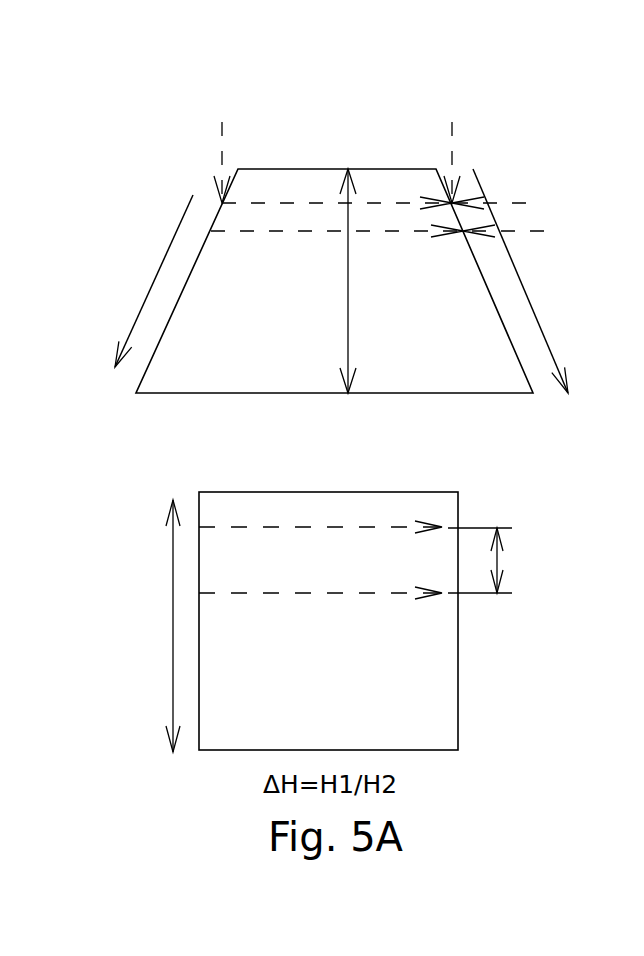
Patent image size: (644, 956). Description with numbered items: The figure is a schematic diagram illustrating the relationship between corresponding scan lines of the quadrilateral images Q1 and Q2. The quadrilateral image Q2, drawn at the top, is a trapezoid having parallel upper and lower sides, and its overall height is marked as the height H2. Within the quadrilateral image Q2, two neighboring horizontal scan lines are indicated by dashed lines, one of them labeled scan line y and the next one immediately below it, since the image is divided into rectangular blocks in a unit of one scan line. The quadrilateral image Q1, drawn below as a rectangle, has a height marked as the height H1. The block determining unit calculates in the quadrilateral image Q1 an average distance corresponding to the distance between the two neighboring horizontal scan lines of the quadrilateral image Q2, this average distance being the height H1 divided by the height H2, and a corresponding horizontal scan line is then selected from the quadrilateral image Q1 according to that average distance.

The quadrilateral image Q1 is at (168, 490).
The quadrilateral image Q2 is at (482, 127).
The horizontal scan line y is at (388, 198).
The height of quadrilateral image Q1 H1 is at (156, 626).
The height of quadrilateral image Q2 H2 is at (366, 281).